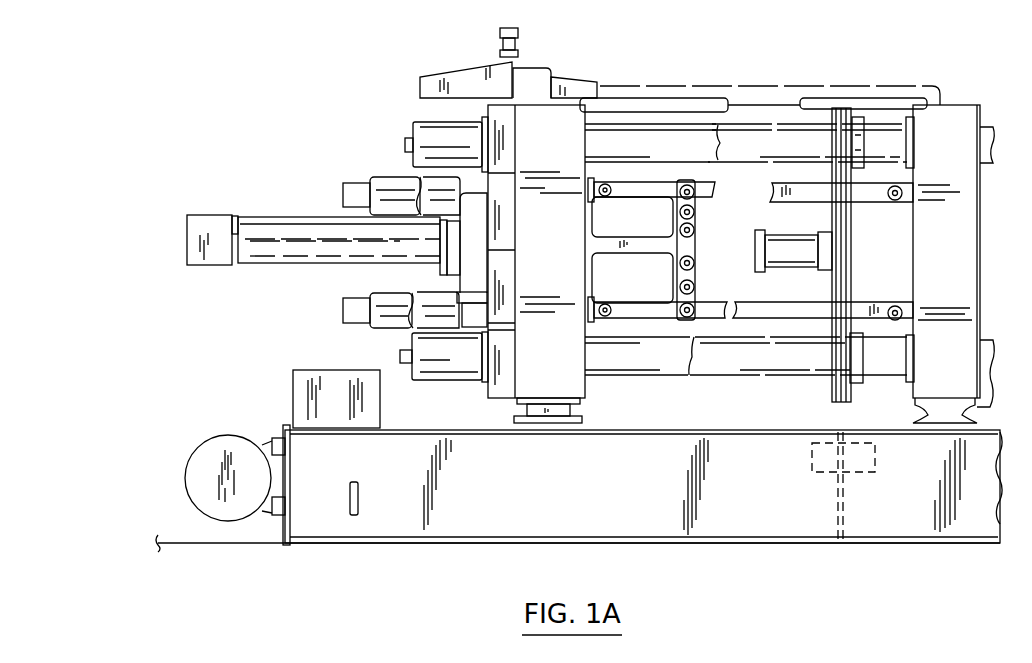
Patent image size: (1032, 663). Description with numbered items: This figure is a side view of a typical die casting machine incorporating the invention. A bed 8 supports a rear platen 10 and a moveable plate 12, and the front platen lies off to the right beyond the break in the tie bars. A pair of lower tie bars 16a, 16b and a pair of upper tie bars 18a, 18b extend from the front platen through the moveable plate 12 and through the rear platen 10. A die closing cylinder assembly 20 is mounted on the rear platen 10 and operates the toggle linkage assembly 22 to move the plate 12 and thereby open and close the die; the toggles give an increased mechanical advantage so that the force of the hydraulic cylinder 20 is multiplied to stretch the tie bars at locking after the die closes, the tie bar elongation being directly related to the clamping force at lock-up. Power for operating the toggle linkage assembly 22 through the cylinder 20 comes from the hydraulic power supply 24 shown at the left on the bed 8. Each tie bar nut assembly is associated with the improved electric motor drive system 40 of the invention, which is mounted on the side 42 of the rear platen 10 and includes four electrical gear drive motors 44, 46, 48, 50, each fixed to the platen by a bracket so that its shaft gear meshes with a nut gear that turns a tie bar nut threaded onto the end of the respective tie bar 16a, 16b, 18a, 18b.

The bed 8 is at (707, 453).
The rear platen 10 is at (556, 118).
The moveable plate 12 is at (962, 127).
The lower tie bar 16a is at (652, 352).
The lower tie bar 16b is at (687, 376).
The upper tie bar 18a is at (645, 148).
The upper tie bar 18b is at (705, 160).
The die closing cylinder assembly 20 is at (248, 257).
The toggle linkage assembly 22 is at (676, 172).
The hydraulic power supply 24 is at (187, 459).
The electric motor drive system 40 is at (325, 281).
The side of rear platen 42 is at (480, 383).
The electrical gear drive motor 44 is at (382, 316).
The electrical gear drive motor 46 is at (383, 177).
The electrical gear drive motor 48 is at (413, 177).
The electrical gear drive motor 50 is at (416, 274).